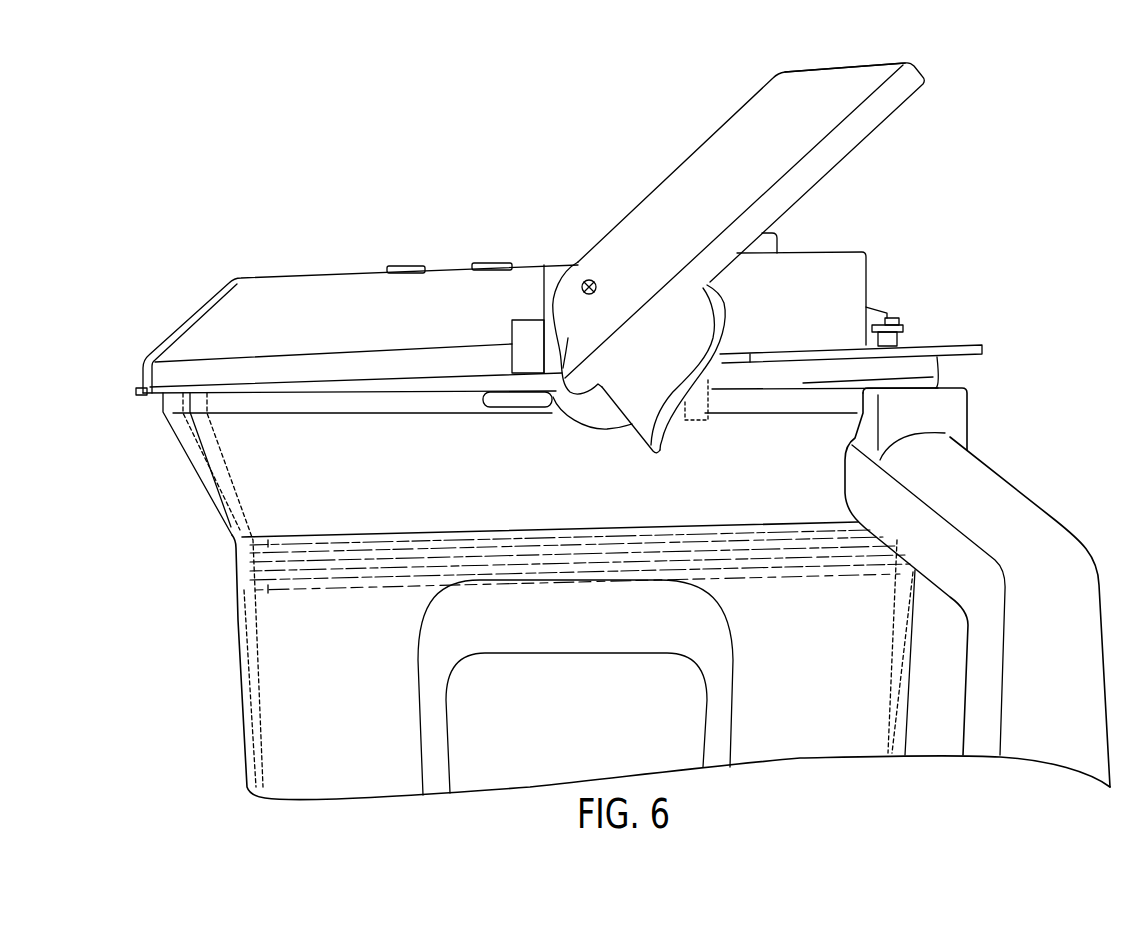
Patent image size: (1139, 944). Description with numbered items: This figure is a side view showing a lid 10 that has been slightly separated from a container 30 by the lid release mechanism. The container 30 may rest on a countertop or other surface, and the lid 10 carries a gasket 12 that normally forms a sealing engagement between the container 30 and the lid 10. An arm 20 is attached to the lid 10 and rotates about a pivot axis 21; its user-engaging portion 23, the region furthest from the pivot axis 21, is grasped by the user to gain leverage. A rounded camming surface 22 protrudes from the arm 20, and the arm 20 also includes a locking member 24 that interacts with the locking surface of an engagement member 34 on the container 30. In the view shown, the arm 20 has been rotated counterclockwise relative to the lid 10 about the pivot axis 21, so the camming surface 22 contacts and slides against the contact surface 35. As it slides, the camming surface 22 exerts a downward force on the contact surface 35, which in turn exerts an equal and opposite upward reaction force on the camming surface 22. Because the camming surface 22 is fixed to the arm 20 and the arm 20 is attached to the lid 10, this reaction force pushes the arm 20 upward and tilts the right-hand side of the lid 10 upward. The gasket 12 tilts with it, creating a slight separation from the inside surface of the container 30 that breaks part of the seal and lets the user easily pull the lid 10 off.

The lid 10 is at (332, 285).
The gasket 12 is at (277, 570).
The arm 20 is at (702, 160).
The pivot axis 21 is at (588, 280).
The camming surface 22 is at (578, 383).
The user-engaging portion 23 is at (843, 67).
The locking member 24 is at (672, 423).
The container 30 is at (287, 683).
The engagement member 34 is at (603, 420).
The contact surface 35 is at (548, 403).